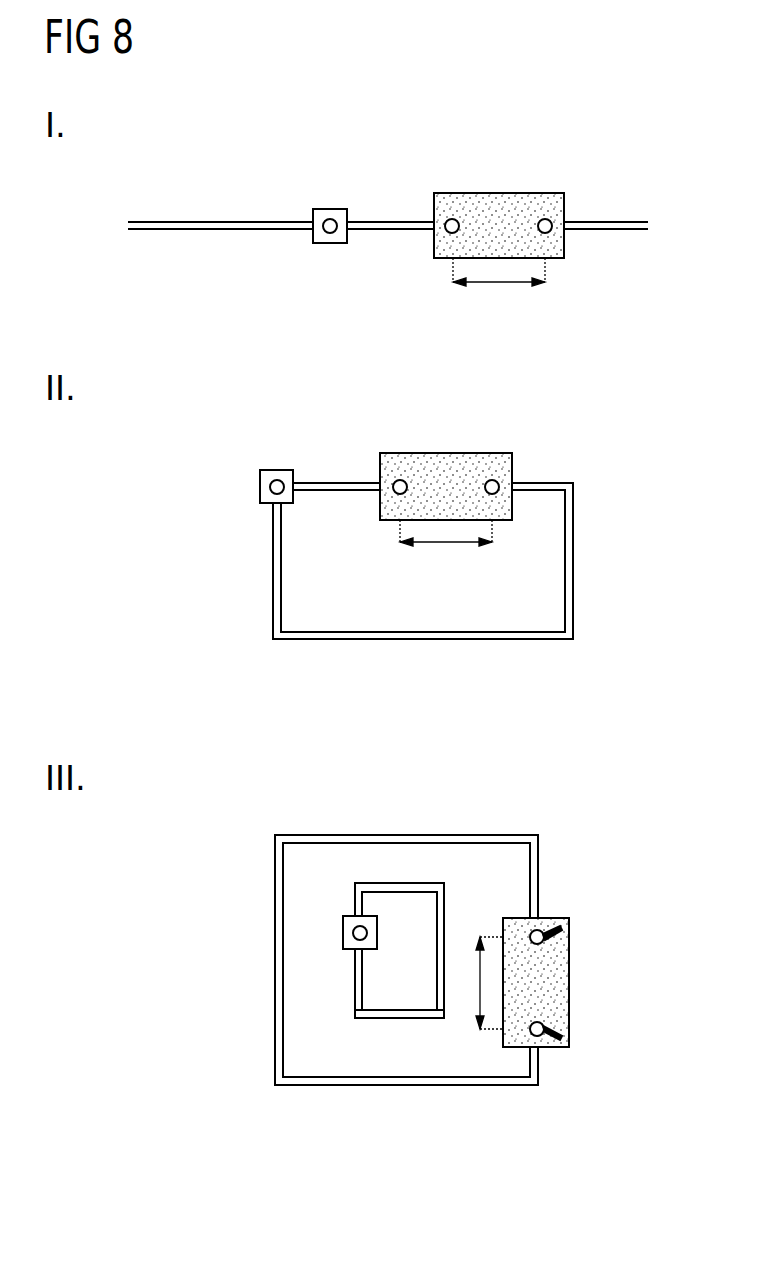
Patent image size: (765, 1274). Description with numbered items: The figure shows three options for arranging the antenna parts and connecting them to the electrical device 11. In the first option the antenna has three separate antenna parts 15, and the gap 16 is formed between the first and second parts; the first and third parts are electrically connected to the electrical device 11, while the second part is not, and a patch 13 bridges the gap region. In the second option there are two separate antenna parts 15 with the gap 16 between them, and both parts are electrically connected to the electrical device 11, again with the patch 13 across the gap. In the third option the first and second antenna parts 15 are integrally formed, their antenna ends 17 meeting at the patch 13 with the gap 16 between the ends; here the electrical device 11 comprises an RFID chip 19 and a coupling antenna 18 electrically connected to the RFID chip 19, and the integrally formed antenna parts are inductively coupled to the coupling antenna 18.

The electrical device 11 is at (330, 209).
The patch 13 is at (501, 193).
The antenna part 15 is at (180, 221).
The gap 16 is at (500, 284).
The antenna ends 17 is at (562, 928).
The coupling antenna 18 is at (390, 1019).
The RFID chip 19 is at (330, 226).